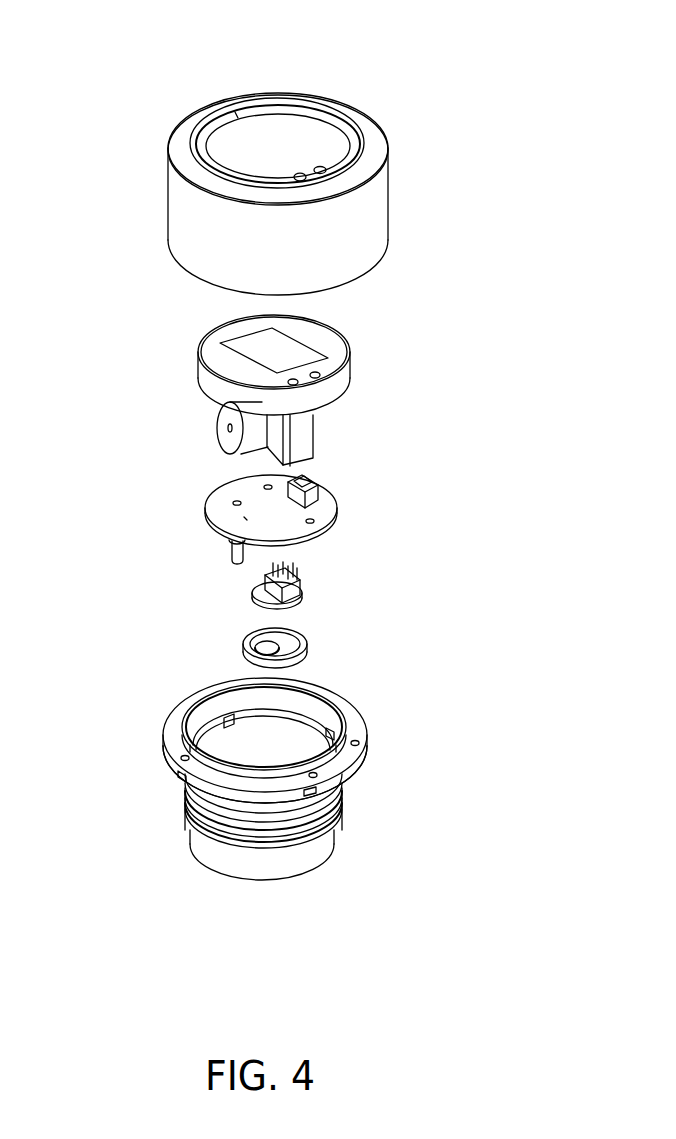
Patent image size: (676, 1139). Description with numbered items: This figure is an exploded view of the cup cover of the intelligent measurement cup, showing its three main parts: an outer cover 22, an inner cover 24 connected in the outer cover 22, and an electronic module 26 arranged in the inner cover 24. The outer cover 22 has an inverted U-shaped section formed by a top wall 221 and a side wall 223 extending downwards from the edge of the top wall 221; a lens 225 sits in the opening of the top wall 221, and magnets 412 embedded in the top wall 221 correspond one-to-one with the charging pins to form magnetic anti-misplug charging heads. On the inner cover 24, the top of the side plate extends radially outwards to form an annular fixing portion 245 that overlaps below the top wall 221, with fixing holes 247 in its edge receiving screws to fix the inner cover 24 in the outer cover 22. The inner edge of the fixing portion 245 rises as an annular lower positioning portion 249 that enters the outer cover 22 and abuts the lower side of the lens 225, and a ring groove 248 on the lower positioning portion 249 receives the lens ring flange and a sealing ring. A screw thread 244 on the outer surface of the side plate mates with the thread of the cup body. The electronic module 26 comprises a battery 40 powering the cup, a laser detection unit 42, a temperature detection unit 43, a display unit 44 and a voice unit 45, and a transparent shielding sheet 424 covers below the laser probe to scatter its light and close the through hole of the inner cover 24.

The outer cover 22 is at (207, 154).
The top wall 221 is at (190, 155).
The side wall 223 is at (190, 193).
The lens 225 is at (233, 137).
The magnets 412 is at (300, 173).
The electronic module 26 is at (207, 466).
The display unit 44 is at (225, 361).
The voice unit 45 is at (225, 417).
The battery 40 is at (277, 446).
The temperature detection unit 43 is at (228, 520).
The laser detection unit 42 is at (211, 585).
The shielding sheet 424 is at (245, 648).
The inner cover 24 is at (285, 759).
The lower positioning portion 249 is at (347, 713).
The ring groove 248 is at (345, 728).
The annular fixing portion 245 is at (345, 762).
The fixing holes 247 is at (318, 776).
The screw thread 244 is at (297, 833).